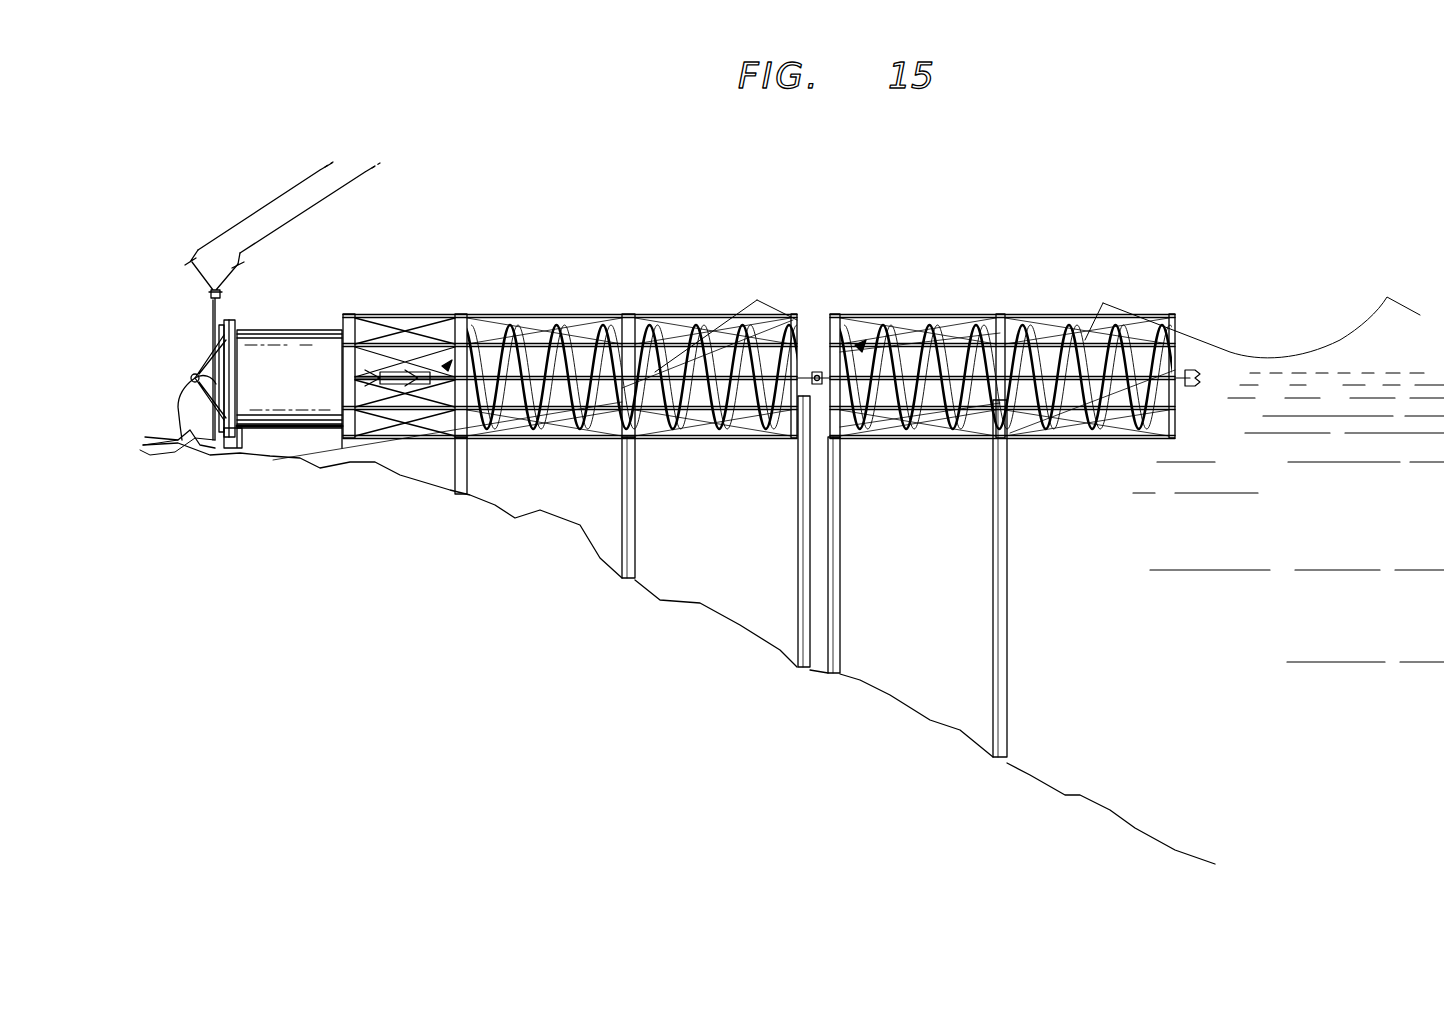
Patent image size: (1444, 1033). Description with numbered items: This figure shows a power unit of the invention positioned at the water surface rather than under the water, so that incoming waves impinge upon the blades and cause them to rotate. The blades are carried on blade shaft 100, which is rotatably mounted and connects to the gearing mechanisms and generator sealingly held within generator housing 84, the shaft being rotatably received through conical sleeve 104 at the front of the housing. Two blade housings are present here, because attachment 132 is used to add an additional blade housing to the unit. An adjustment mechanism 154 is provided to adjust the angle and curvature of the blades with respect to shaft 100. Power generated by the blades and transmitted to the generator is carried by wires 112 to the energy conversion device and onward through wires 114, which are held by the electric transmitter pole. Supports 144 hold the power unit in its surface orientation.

The generator housing 84 is at (288, 348).
The blade shaft 100 is at (703, 372).
The conical sleeve 104 is at (392, 368).
The wires 112 is at (175, 405).
The wires 114 is at (290, 220).
The attachment 132 is at (813, 365).
The supports 144 is at (1002, 563).
The adjustment mechanism 154 is at (444, 365).